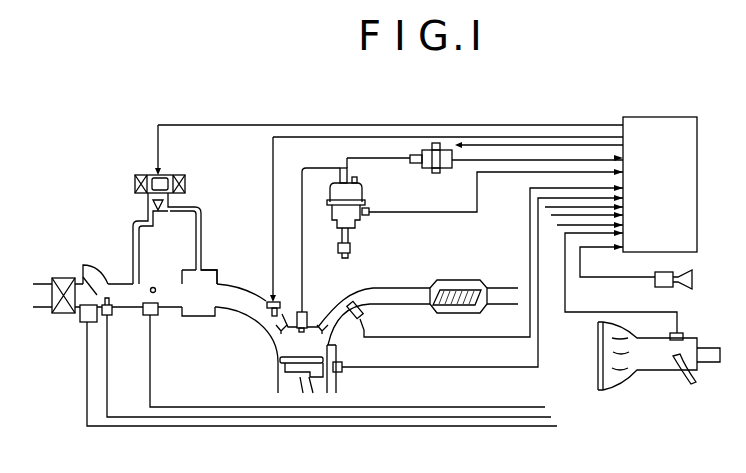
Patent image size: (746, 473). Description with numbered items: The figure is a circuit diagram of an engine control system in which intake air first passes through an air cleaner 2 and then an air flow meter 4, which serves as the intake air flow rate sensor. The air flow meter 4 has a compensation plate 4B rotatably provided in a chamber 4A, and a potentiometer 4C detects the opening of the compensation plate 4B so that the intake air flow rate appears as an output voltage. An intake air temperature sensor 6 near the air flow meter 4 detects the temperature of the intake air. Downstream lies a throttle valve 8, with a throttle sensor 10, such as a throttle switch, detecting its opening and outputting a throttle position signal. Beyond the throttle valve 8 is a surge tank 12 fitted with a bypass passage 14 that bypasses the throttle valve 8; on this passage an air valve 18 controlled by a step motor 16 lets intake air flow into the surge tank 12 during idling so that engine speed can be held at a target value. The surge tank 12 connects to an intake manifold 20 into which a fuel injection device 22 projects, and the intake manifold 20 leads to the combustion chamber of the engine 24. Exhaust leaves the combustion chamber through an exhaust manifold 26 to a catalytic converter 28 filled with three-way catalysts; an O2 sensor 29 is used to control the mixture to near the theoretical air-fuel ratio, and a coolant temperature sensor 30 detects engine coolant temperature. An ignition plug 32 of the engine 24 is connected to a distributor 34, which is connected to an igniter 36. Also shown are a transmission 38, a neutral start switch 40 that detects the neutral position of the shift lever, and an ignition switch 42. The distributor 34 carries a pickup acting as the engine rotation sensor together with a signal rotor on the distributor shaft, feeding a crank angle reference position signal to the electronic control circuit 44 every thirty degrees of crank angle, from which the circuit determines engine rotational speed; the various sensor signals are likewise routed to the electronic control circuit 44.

The air cleaner 2 is at (51, 281).
The air flow meter 4 is at (293, 314).
The chamber 4A is at (98, 263).
The compensation plate 4B is at (81, 267).
The potentiometer 4C is at (79, 318).
The intake air temperature sensor 6 is at (112, 320).
The throttle valve 8 is at (154, 287).
The throttle sensor 10 is at (158, 318).
The surge tank 12 is at (205, 318).
The bypass passage 14 is at (203, 230).
The step motor 16 is at (355, 165).
The air valve 18 is at (134, 192).
The intake manifold 20 is at (250, 308).
The fuel injection device 22 is at (268, 299).
The engine 24 is at (277, 375).
The exhaust manifold 26 is at (358, 292).
The catalytic converter 28 is at (458, 279).
The O2 sensor 29 is at (353, 322).
The coolant temperature sensor 30 is at (343, 371).
The ignition plug 32 is at (303, 311).
The distributor 34 is at (365, 216).
The igniter 36 is at (436, 142).
The transmission 38 is at (657, 372).
The neutral start switch 40 is at (684, 334).
The ignition switch 42 is at (654, 282).
The electronic control circuit 44 is at (656, 117).